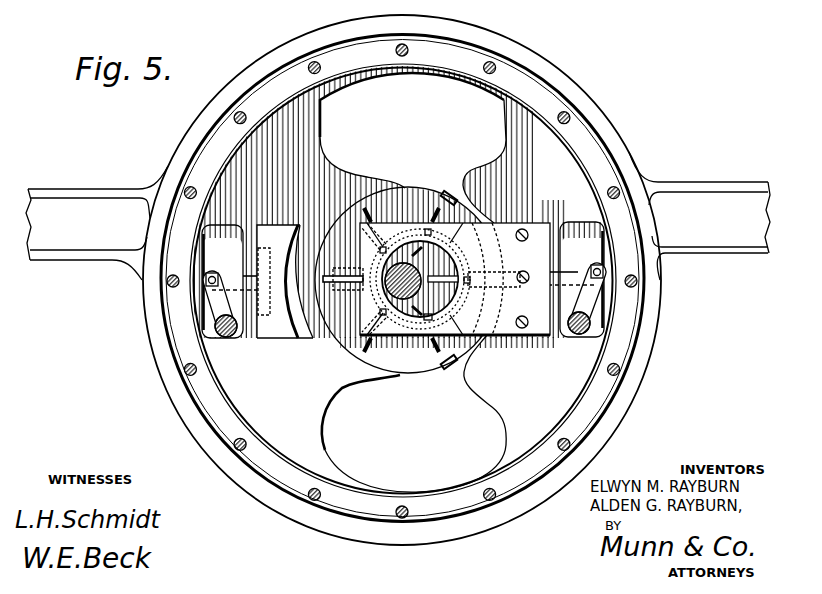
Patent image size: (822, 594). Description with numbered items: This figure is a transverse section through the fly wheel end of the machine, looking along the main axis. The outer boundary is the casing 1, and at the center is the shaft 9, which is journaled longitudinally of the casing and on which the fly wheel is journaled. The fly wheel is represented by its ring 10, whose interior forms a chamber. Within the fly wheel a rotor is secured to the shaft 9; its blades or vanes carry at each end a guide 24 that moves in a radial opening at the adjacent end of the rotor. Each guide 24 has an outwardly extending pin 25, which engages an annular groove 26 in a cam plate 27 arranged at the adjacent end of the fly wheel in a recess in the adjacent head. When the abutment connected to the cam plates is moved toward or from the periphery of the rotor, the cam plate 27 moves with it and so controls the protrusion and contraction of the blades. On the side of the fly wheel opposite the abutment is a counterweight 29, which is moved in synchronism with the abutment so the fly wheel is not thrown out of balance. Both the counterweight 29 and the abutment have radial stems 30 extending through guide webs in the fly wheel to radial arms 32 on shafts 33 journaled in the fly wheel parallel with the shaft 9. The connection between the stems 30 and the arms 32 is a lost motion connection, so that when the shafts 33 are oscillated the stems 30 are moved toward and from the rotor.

The casing 1 is at (304, 43).
The shaft 9 is at (397, 290).
The ring 10 is at (557, 88).
The guide 24 is at (443, 193).
The pin 25 is at (428, 322).
The annular groove 26 is at (447, 247).
The cam plate 27 is at (514, 226).
The counterweight 29 is at (285, 336).
The radial stem 30 is at (230, 270).
The radial arm 32 is at (210, 307).
The shaft 33 is at (222, 333).